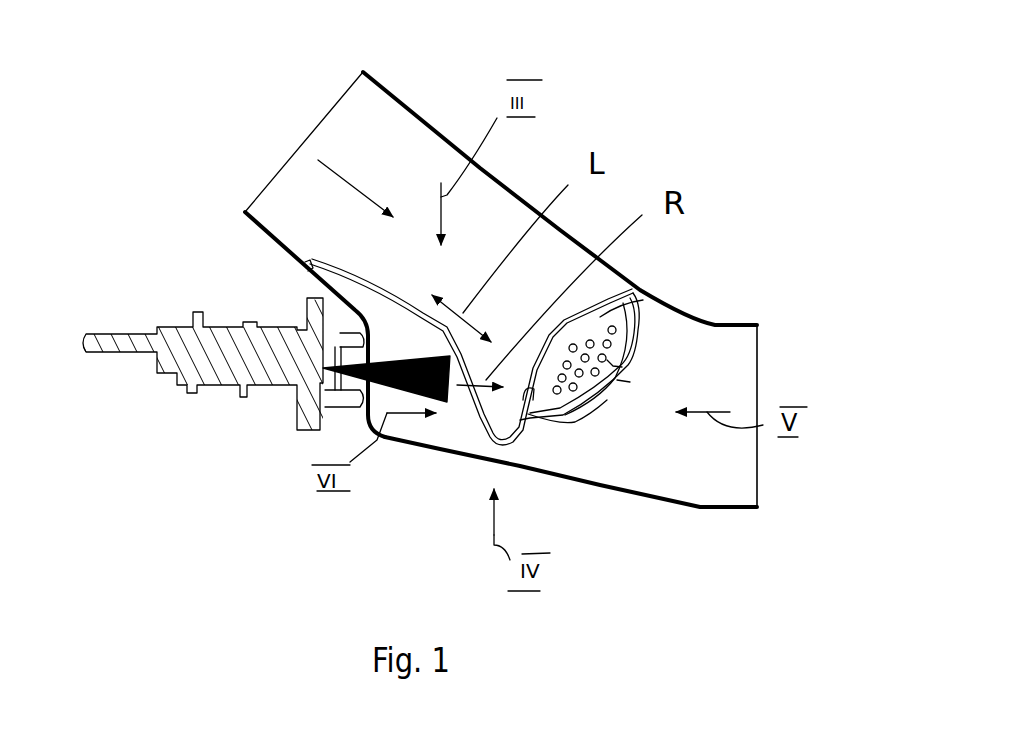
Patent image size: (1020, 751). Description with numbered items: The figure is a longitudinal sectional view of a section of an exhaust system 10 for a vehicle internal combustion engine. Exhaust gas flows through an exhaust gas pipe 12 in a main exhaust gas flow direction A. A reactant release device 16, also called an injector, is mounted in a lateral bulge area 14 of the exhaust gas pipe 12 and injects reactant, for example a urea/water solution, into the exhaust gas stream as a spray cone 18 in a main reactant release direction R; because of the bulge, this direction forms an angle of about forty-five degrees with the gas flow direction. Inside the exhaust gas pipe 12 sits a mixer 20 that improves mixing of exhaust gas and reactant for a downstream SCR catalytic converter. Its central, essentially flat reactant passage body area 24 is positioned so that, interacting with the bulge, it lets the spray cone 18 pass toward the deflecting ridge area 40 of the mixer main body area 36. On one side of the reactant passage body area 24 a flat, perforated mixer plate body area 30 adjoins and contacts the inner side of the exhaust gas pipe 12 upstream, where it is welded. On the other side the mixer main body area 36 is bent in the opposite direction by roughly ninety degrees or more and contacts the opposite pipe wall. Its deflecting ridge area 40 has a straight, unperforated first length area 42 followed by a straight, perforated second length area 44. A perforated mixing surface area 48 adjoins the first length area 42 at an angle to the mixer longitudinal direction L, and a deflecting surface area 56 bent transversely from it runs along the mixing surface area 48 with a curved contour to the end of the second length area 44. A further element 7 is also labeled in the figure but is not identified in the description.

The air flow direction 7 is at (333, 173).
The exhaust system 10 is at (644, 118).
The exhaust gas pipe 12 is at (373, 72).
The lateral bulge area 14 is at (425, 440).
The reactant release device 16 is at (208, 392).
The spray cone 18 is at (337, 335).
The mixer 20 is at (641, 414).
The reactant passage body area 24 is at (480, 423).
The mixer plate body area 30 is at (348, 273).
The mixer main body area 36 is at (600, 400).
The deflecting ridge area 40 is at (590, 332).
The first length area 42 is at (522, 430).
The second length area 44 is at (605, 310).
The mixing surface area 48 is at (622, 367).
The deflecting surface area 56 is at (617, 380).